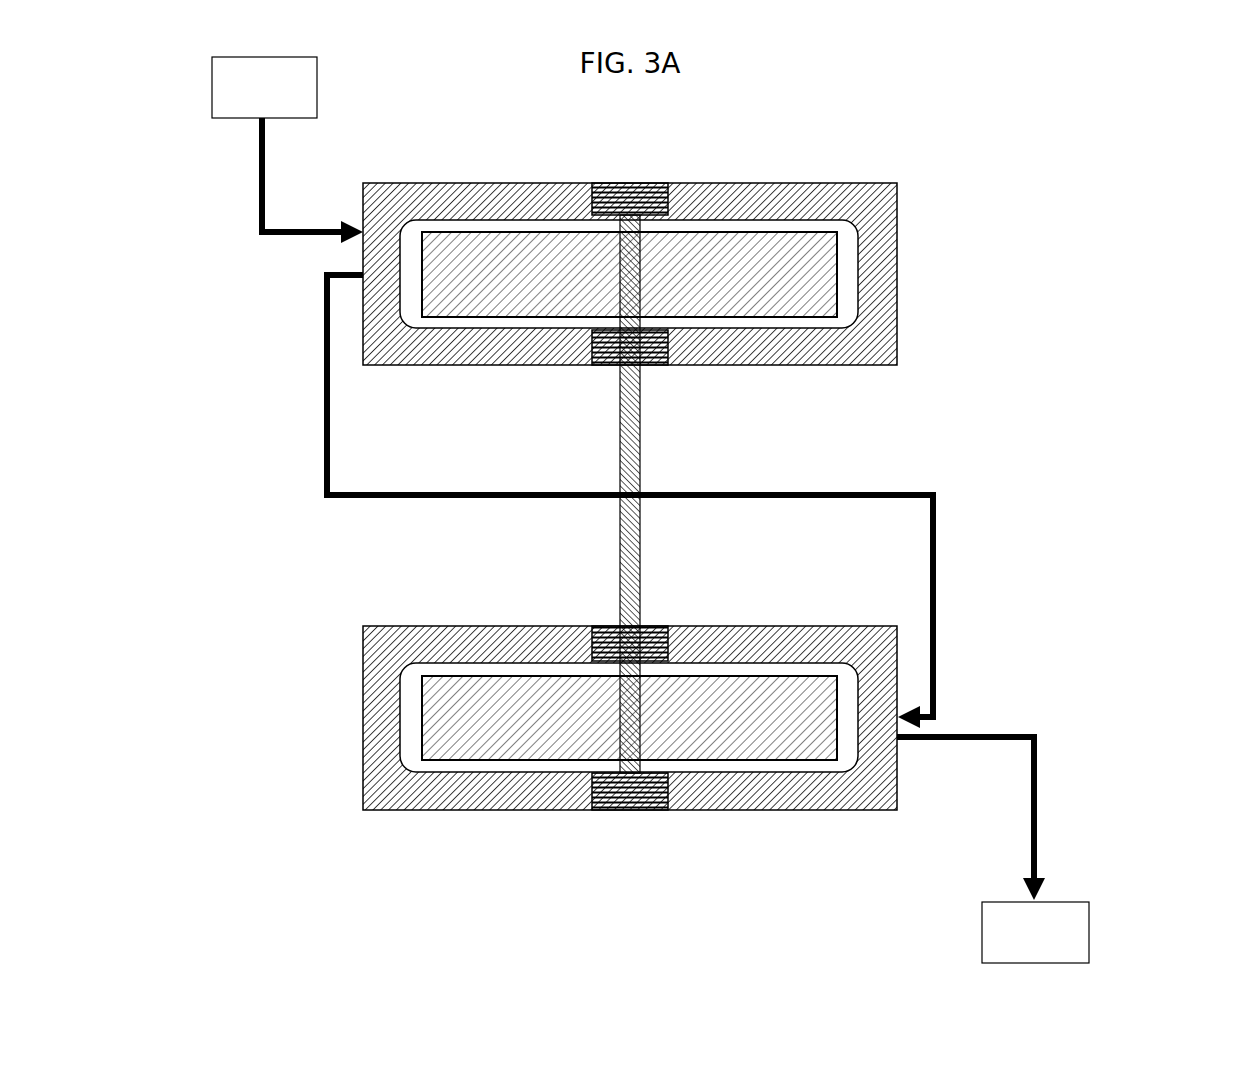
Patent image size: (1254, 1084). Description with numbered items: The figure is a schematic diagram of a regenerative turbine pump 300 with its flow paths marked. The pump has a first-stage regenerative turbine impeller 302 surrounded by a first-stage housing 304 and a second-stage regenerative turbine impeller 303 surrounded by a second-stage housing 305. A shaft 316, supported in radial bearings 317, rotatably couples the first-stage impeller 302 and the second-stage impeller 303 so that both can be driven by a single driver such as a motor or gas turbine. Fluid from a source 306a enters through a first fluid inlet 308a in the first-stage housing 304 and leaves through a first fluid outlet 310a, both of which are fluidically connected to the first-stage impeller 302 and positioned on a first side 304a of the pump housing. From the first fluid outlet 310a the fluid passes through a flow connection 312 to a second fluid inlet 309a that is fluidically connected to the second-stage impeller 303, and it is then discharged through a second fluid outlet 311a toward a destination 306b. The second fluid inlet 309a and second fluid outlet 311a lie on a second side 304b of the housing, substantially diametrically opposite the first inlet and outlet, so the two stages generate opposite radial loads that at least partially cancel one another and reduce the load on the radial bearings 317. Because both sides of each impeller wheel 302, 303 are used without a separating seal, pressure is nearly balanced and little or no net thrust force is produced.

The regenerative turbine pump 300 is at (1003, 383).
The first-stage regenerative turbine impeller 302 is at (655, 287).
The second-stage regenerative turbine impeller 303 is at (655, 738).
The first-stage housing 304 is at (498, 185).
The first side 304a is at (363, 338).
The second side 304b is at (898, 195).
The second-stage housing 305 is at (496, 626).
The fluid source 306a is at (300, 106).
The fluid sink 306b is at (1071, 949).
The first fluid inlet 308a is at (345, 236).
The second fluid inlet 309a is at (898, 718).
The first fluid outlet 310a is at (338, 278).
The second fluid outlet 311a is at (915, 728).
The flow connection 312 is at (473, 495).
The shaft 316 is at (642, 467).
The radial bearings 317 is at (627, 183).